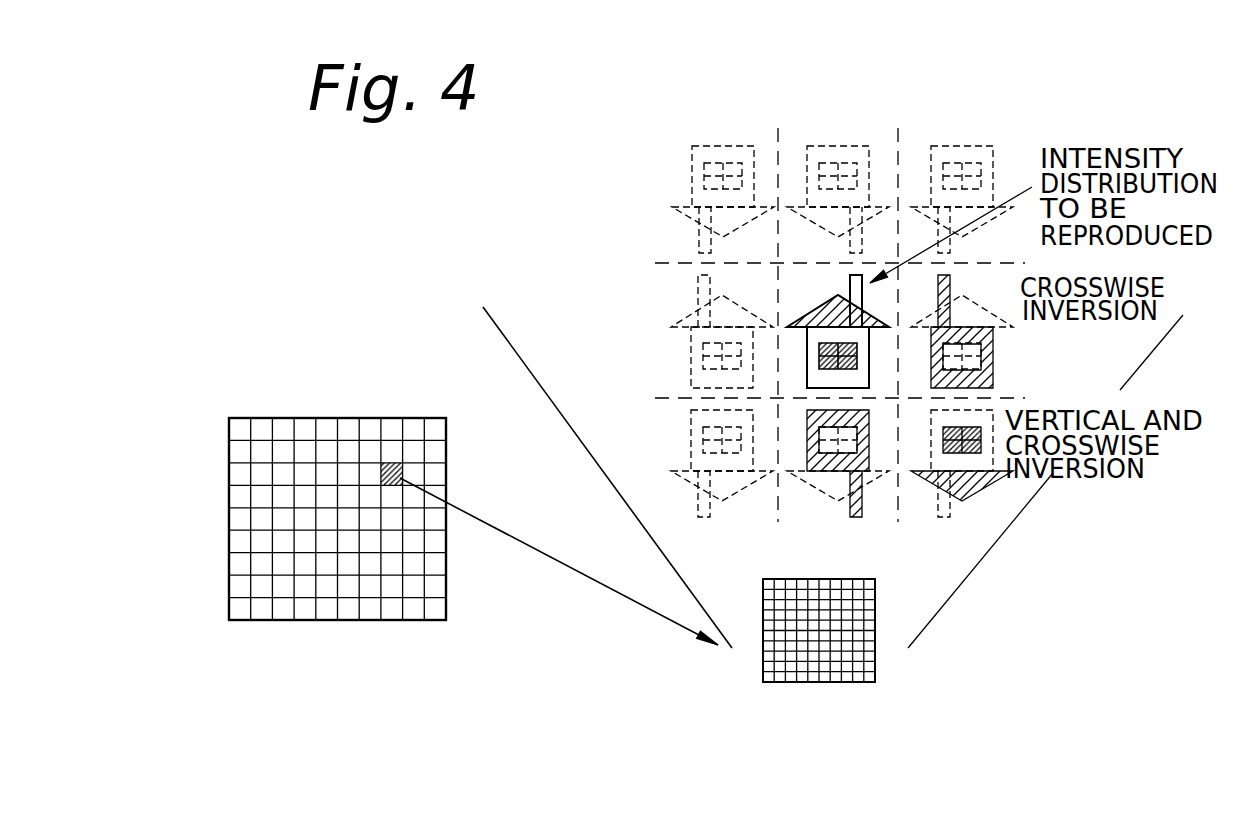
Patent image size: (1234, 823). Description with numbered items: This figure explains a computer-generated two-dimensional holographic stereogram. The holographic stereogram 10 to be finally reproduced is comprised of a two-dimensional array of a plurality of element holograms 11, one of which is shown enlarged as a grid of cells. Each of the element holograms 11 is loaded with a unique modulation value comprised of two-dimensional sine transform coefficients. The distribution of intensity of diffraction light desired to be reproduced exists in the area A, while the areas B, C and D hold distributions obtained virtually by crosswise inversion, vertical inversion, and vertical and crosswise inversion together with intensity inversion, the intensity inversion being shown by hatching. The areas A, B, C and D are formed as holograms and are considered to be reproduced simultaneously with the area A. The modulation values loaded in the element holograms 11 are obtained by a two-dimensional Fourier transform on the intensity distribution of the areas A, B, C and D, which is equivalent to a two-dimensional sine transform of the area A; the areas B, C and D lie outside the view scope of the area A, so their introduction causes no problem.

The holographic stereogram 10 is at (222, 578).
The element holograms 11 is at (760, 663).
The area A is at (835, 329).
The area B is at (957, 329).
The area C is at (833, 462).
The area D is at (957, 462).